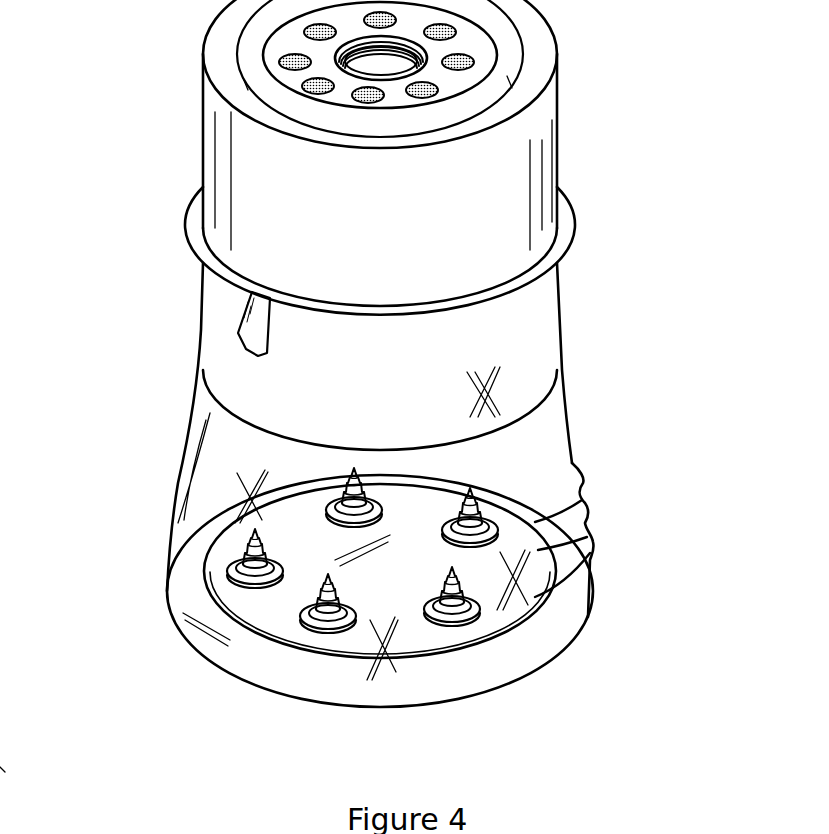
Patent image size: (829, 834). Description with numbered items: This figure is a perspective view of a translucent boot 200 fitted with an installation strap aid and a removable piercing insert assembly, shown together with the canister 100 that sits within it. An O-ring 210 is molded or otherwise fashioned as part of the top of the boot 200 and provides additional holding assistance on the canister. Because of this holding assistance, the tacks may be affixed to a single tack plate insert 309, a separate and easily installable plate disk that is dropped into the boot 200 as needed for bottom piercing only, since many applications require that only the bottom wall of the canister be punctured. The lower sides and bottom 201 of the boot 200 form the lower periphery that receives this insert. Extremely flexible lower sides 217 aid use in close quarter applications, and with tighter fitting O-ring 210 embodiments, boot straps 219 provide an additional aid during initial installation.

The filter canister 100 is at (183, 147).
The O-ring 210 is at (192, 228).
The boot strap 219 is at (240, 340).
The boot 200 is at (155, 428).
The flexible lower sides 217 is at (587, 532).
The tack plate insert 309 is at (272, 598).
The lower sides and bottom 201 is at (0, 825).